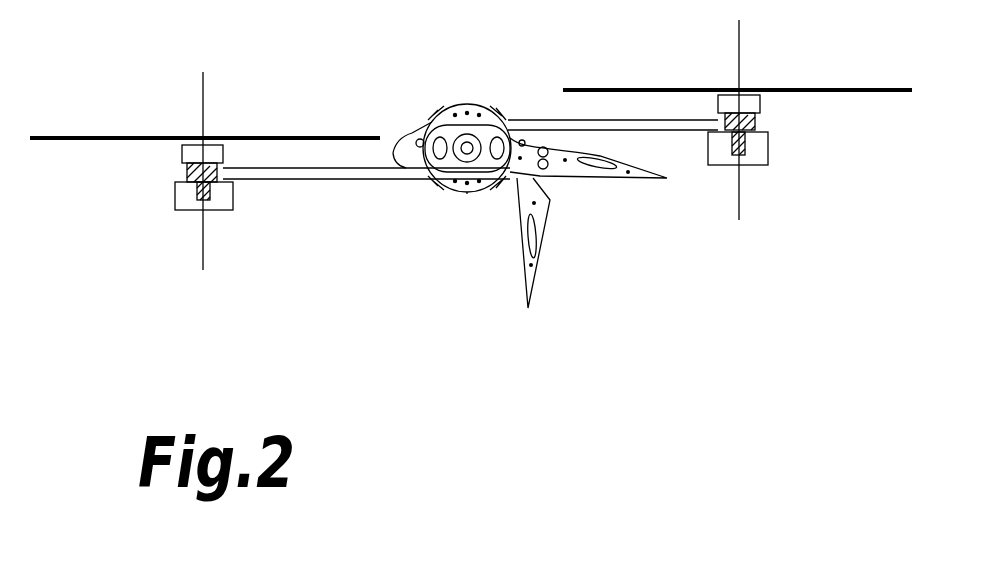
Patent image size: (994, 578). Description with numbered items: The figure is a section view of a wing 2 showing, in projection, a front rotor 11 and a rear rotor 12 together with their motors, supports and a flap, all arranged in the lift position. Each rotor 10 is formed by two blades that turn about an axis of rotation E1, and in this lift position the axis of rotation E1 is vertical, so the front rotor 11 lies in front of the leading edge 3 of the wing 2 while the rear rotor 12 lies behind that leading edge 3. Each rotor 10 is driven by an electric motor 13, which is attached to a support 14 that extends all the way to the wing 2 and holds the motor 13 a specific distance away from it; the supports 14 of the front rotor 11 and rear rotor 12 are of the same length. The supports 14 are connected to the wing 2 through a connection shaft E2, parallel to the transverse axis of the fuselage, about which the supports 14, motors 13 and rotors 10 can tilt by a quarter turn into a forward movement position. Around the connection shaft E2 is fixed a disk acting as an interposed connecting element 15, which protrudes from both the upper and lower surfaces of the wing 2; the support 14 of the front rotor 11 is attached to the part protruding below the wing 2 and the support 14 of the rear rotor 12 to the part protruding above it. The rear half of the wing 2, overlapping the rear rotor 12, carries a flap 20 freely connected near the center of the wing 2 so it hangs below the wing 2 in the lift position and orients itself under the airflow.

The wing 2 is at (420, 183).
The leading edge 3 is at (385, 183).
The rotor 10 is at (471, 75).
The front rotor 11 is at (263, 138).
The rear rotor 12 is at (643, 90).
The electric motor 13 is at (187, 178).
The support 14 is at (358, 165).
The interposed connecting element 15 is at (463, 105).
The flap 20 is at (540, 277).
The axis of rotation E1 is at (203, 105).
The connection shaft E2 is at (463, 192).